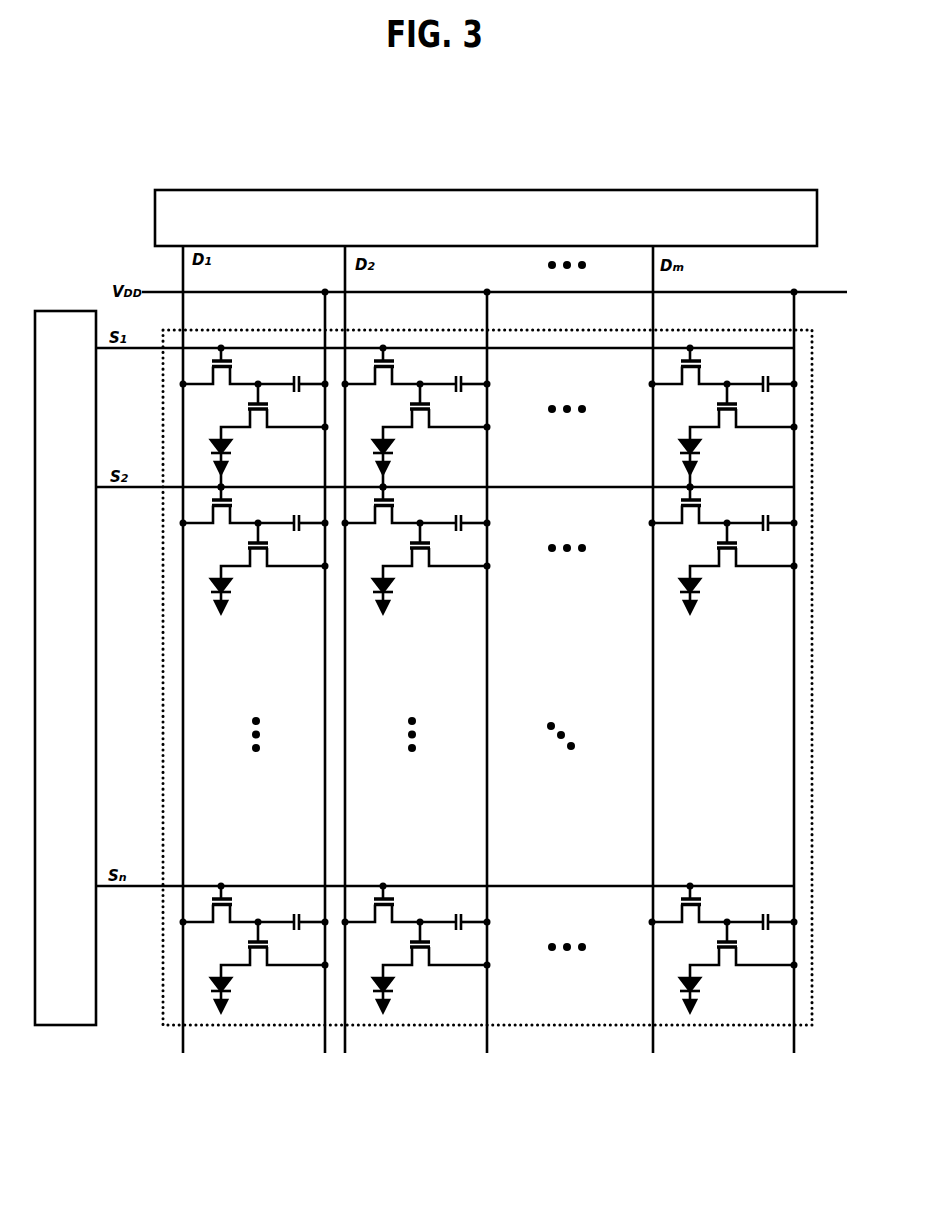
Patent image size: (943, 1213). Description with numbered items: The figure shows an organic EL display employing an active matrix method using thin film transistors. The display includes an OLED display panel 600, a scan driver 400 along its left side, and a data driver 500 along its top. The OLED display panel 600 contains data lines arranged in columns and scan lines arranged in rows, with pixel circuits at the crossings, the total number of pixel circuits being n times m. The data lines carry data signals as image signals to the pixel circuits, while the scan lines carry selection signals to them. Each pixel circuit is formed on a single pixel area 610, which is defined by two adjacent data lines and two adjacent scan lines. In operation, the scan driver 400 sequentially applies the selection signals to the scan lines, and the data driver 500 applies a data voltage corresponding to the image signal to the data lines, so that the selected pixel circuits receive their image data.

The scan driver 400 is at (63, 311).
The data driver 500 is at (783, 190).
The OLED display panel 600 is at (504, 665).
The pixel area 610 is at (253, 352).